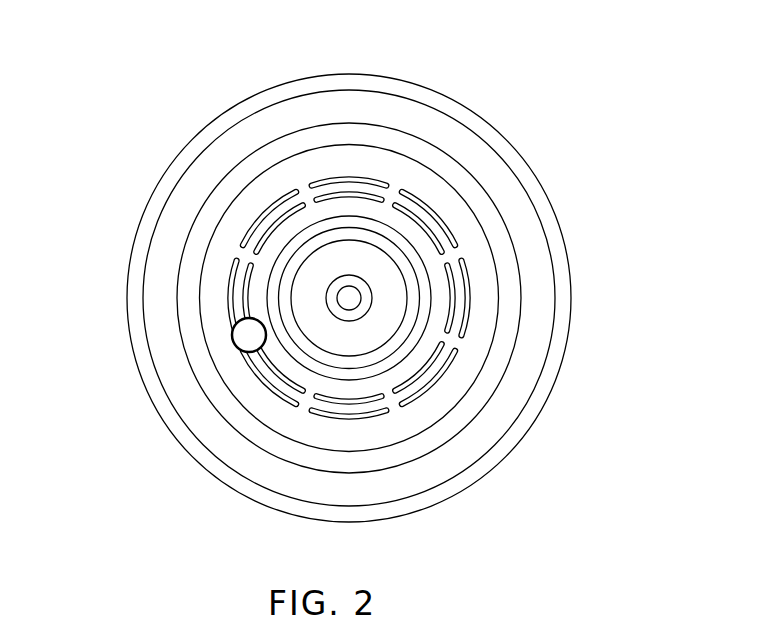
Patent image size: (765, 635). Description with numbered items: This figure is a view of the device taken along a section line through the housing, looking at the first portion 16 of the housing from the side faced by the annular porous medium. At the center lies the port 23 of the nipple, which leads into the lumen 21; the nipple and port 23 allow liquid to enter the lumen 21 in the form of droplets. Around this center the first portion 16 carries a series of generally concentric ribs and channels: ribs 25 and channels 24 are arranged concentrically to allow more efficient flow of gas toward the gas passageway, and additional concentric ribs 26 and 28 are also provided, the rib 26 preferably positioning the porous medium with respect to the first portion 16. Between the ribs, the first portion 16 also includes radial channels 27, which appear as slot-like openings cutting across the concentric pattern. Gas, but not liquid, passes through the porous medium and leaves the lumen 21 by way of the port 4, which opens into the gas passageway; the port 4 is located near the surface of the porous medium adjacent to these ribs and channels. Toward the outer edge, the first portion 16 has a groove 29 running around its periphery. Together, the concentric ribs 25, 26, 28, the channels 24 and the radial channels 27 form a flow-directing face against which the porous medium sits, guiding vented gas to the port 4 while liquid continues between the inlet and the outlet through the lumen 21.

The first portion 16 is at (488, 478).
The groove 29 is at (190, 192).
The concentric rib 28 is at (452, 159).
The channels 24 is at (408, 372).
The rib 26 is at (397, 333).
The lumen 21 is at (390, 288).
The port 23 is at (355, 300).
The radial channels 27 is at (397, 184).
The ribs 25 is at (323, 407).
The port 4 is at (240, 348).